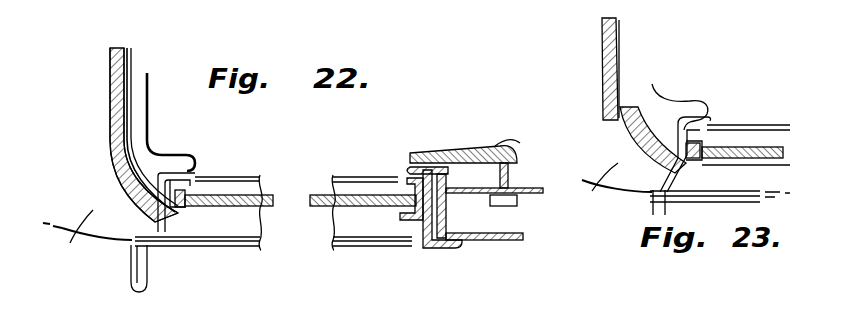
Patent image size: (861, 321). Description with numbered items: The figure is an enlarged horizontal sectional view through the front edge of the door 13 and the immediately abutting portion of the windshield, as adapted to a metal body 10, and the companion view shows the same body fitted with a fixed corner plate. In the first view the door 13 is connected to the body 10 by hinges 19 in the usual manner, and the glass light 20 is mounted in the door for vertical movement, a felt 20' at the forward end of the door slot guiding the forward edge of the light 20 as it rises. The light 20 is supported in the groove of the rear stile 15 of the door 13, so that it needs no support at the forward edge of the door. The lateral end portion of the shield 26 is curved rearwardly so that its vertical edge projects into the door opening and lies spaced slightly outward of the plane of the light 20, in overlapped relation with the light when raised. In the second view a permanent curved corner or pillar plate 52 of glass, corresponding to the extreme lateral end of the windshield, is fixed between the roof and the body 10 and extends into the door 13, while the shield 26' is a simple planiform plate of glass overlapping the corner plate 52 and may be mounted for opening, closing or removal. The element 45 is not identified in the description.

In FIG. 22, the body 10 is at (87, 234).
In FIG. 23, the body 10 is at (615, 181).
In FIG. 22, the door 13 is at (345, 228).
In FIG. 23, the door 13 is at (785, 128).
In FIG. 22, the rear stile 15 is at (424, 227).
In FIG. 22, the hinges 19 is at (131, 272).
In FIG. 23, the hinges 19 is at (653, 203).
In FIG. 22, the light 20 is at (300, 175).
In FIG. 23, the light 20 is at (746, 123).
In FIG. 22, the felt 20' is at (196, 152).
In FIG. 23, the felt 20' is at (712, 127).
In FIG. 22, the shield 26 is at (149, 135).
In FIG. 23, the shield 26' is at (646, 67).
In FIG. 22, the flange strip 45 is at (486, 243).
In FIG. 23, the corner or pillar plate 52 is at (640, 128).